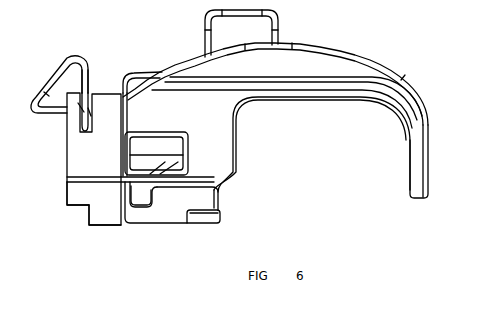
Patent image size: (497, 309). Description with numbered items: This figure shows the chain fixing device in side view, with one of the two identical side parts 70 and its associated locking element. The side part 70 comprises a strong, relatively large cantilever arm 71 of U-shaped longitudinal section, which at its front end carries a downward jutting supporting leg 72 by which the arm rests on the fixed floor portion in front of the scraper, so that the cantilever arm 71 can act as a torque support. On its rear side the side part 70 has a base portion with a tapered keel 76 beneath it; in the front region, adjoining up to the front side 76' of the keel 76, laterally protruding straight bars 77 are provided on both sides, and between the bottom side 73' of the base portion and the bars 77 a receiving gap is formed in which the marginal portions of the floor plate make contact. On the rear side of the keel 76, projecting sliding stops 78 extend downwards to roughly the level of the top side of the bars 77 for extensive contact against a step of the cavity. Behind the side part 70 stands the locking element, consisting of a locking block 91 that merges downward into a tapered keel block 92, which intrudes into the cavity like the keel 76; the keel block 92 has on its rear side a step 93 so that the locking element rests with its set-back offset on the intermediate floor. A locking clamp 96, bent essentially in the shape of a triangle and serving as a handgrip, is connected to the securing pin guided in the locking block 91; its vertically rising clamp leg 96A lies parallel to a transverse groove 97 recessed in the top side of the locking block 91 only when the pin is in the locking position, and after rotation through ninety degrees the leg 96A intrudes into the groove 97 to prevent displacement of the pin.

The side part 70 is at (401, 38).
The cantilever arm 71 is at (323, 66).
The supporting leg 72 is at (417, 162).
The bottom side of the base portion 73' is at (221, 194).
The front side of the keel 76' is at (244, 203).
The keel 76 is at (156, 227).
The bars 77 is at (203, 218).
The sliding stops 78 is at (139, 204).
The locking block 91 is at (78, 141).
The keel block 92 is at (105, 212).
The step 93 is at (80, 215).
The locking clamp 96 is at (48, 78).
The clamp leg 96A is at (89, 81).
The transverse groove 97 is at (90, 118).